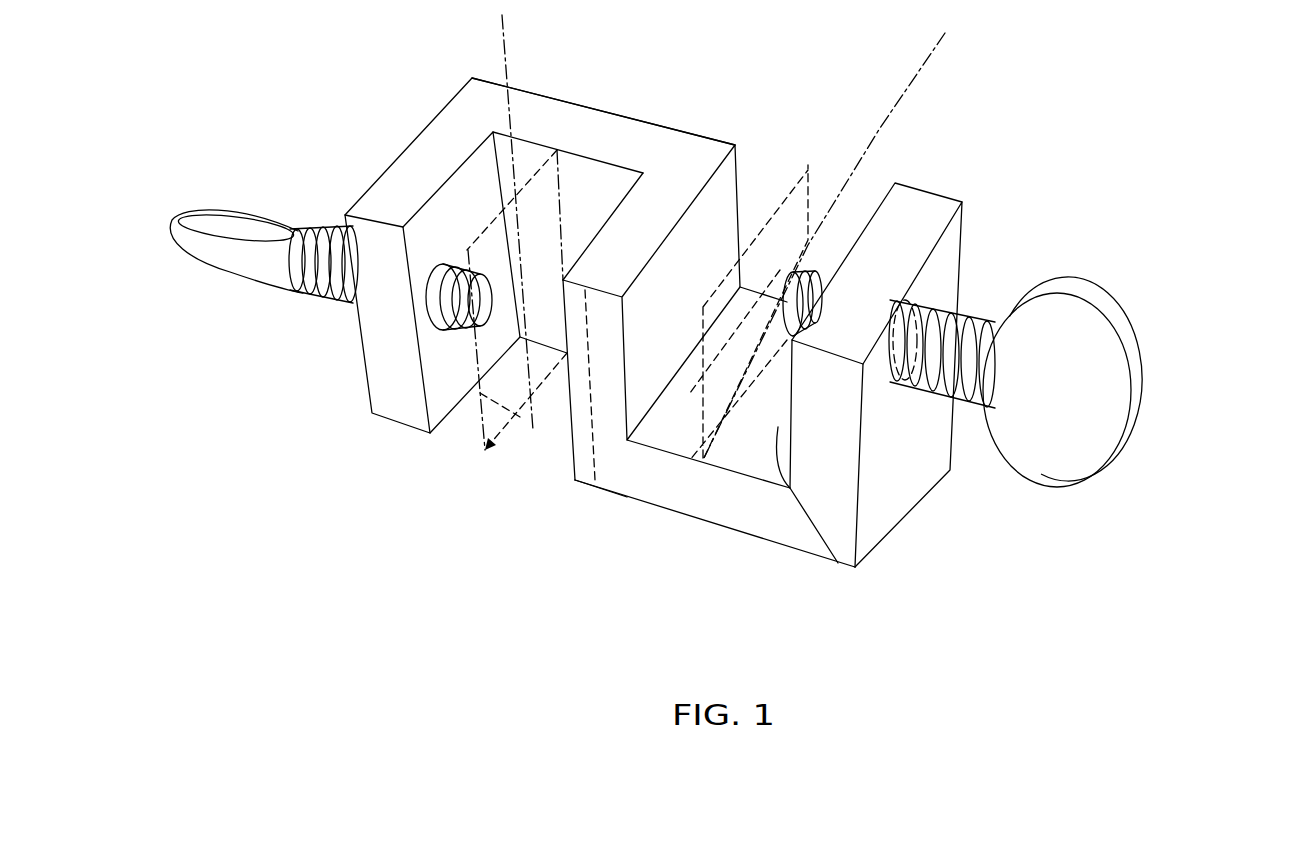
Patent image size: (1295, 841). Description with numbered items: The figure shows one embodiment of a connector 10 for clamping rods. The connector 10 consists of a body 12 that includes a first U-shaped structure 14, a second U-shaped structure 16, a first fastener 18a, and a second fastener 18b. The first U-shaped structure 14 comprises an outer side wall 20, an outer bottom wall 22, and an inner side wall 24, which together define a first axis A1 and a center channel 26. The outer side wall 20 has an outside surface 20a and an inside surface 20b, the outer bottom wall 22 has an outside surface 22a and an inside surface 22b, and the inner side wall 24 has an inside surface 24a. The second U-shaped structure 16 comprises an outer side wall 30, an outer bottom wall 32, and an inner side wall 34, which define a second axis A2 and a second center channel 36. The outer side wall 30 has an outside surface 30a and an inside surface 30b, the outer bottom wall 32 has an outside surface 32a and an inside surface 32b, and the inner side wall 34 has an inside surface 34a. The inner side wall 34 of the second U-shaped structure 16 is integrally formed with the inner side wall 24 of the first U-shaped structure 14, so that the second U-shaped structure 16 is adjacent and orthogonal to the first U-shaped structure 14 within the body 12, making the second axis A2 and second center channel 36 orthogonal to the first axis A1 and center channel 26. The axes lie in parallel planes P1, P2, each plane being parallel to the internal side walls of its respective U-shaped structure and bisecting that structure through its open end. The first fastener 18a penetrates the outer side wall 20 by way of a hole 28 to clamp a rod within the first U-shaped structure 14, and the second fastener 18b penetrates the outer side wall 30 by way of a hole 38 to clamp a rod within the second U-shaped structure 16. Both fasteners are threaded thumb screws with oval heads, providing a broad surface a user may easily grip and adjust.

The connector 10 is at (1162, 78).
The body 12 is at (978, 162).
The first U-shaped structure 14 is at (577, 517).
The second U-shaped structure 16 is at (930, 160).
The first fastener 18a is at (218, 223).
The second fastener 18b is at (1065, 298).
The outer side wall 20 is at (437, 132).
The outside surface 20a is at (367, 183).
The inside surface 20b is at (378, 413).
The outer bottom wall 22 is at (527, 107).
The outside surface 22a is at (592, 107).
The inside surface 22b is at (580, 205).
The inner side wall 24 is at (623, 200).
The inside surface 24a is at (650, 192).
The center channel 26 is at (548, 464).
The hole 28 is at (420, 323).
The outer side wall 30 is at (847, 487).
The outside surface 30a is at (880, 486).
The inside surface 30b is at (838, 565).
The outer bottom wall 32 is at (692, 495).
The outside surface 32a is at (718, 527).
The inside surface 32b is at (753, 447).
The inner side wall 34 is at (617, 403).
The inside surface 34a is at (632, 440).
The second center channel 36 is at (867, 197).
The hole 38 is at (948, 300).
The plane P1 is at (517, 357).
The plane P2 is at (778, 212).
The first axis A1 is at (502, 46).
The second axis A2 is at (946, 50).